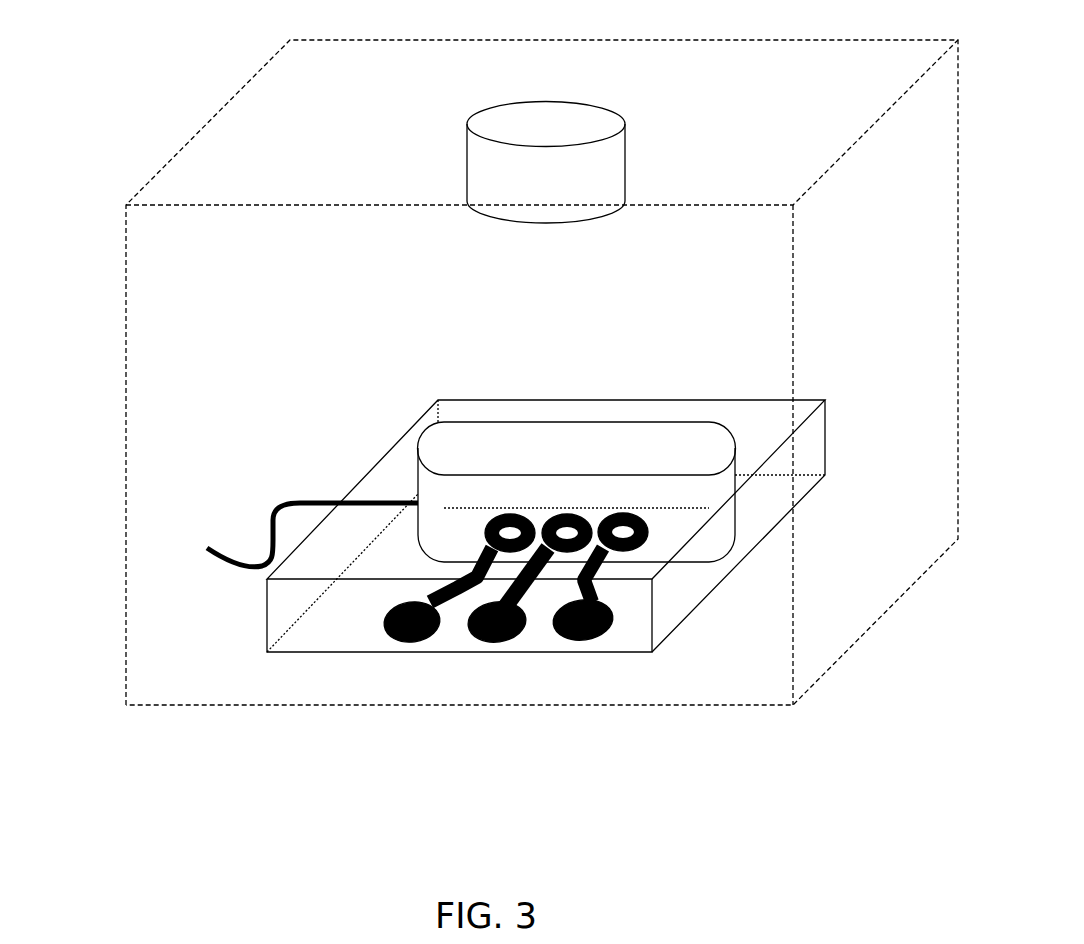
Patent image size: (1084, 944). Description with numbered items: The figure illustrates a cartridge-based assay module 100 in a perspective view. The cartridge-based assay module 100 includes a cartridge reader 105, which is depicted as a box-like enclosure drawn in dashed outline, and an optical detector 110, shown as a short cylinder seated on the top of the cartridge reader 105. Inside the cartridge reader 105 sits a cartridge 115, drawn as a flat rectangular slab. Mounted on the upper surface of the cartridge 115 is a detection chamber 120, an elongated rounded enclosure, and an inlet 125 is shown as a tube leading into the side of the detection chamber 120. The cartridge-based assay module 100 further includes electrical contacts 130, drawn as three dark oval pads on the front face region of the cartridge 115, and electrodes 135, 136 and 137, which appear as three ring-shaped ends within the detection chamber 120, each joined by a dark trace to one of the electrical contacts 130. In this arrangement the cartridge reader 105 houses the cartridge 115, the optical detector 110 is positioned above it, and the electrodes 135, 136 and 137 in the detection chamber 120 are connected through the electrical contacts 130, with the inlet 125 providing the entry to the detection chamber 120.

The cartridge-based assay module 100 is at (501, 353).
The cartridge reader 105 is at (509, 372).
The optical detector 110 is at (466, 148).
The cartridge 115 is at (605, 522).
The detection chamber 120 is at (526, 428).
The inlet 125 is at (274, 501).
The electrical contacts 130 is at (294, 646).
The electrode 135 is at (544, 442).
The electrode 136 is at (587, 482).
The electrode 137 is at (657, 494).